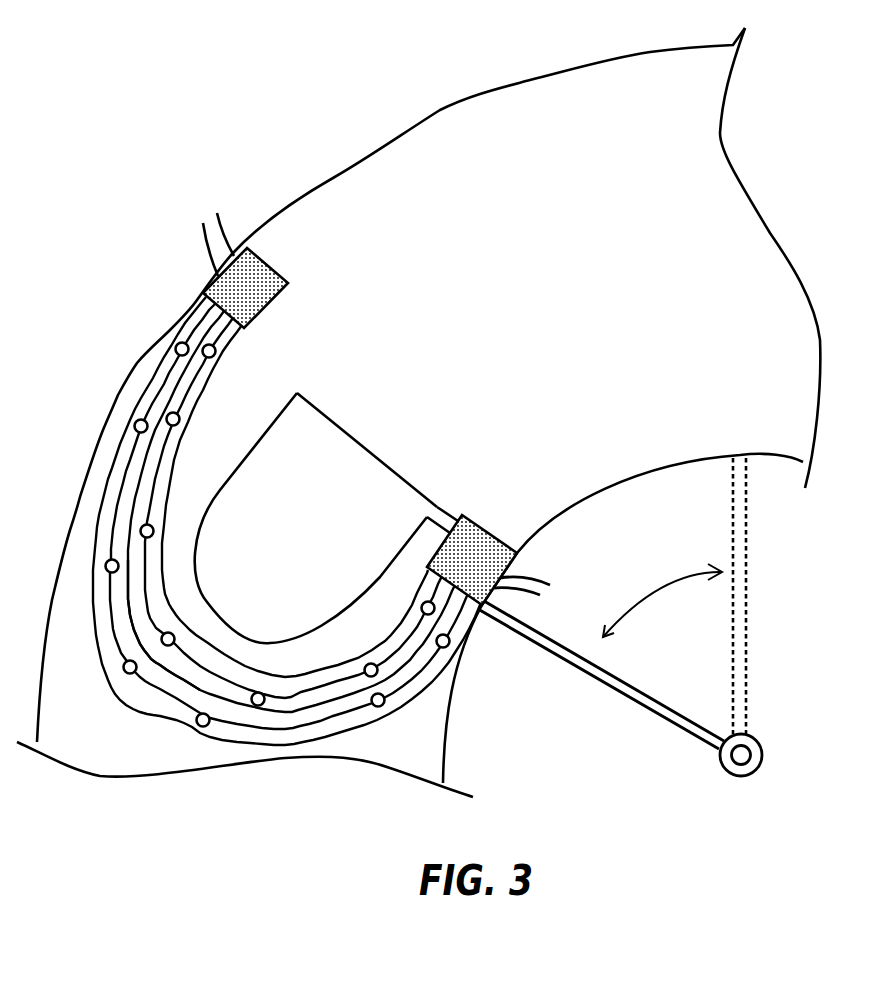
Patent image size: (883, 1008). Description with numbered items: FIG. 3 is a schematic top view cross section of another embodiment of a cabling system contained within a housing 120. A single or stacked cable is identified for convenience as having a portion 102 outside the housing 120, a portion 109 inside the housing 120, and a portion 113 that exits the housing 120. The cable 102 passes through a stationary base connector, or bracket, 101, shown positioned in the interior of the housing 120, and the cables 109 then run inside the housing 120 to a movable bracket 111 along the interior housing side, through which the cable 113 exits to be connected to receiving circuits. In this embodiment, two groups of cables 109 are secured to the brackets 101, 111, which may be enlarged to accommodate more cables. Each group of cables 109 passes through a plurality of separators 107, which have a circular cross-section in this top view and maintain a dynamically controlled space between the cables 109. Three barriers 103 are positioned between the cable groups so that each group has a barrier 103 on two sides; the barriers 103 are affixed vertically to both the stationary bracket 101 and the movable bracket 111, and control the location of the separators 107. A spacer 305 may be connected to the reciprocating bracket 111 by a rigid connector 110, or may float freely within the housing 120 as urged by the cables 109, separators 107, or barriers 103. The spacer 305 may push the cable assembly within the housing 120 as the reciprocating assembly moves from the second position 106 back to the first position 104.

The housing 120 is at (348, 97).
The stationary base connector (bracket) 101 is at (272, 258).
The cable 102 is at (187, 230).
The barrier 103 is at (118, 640).
The first position 104 is at (622, 692).
The second position 106 is at (748, 530).
The separator 107 is at (368, 678).
The cable 109 is at (187, 675).
The rigid connector 110 is at (447, 497).
The movable bracket 111 is at (493, 527).
The cable 113 is at (556, 565).
The spacer 305 is at (330, 408).